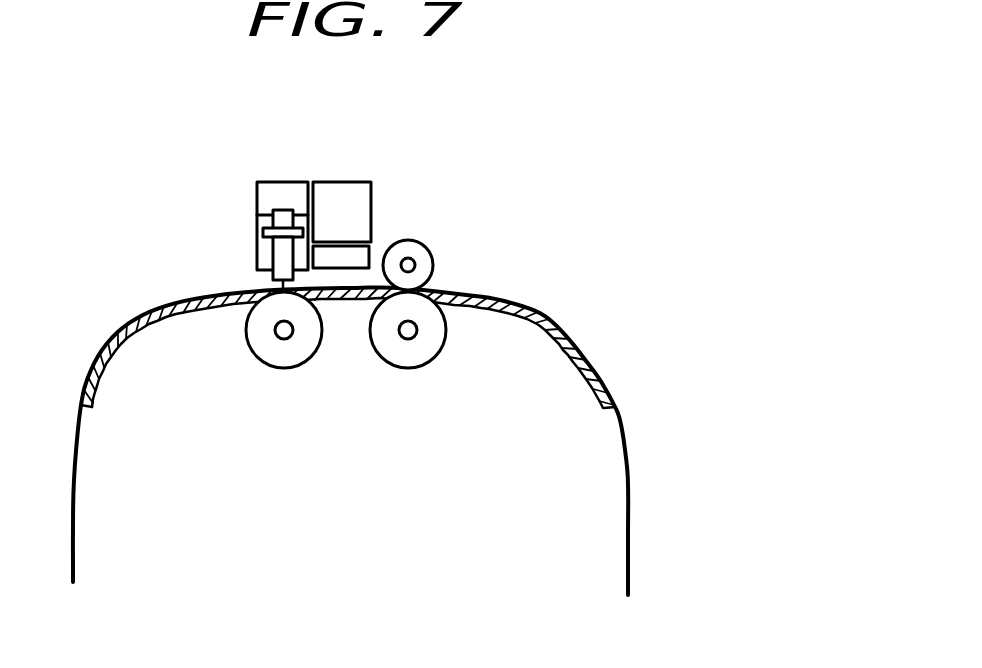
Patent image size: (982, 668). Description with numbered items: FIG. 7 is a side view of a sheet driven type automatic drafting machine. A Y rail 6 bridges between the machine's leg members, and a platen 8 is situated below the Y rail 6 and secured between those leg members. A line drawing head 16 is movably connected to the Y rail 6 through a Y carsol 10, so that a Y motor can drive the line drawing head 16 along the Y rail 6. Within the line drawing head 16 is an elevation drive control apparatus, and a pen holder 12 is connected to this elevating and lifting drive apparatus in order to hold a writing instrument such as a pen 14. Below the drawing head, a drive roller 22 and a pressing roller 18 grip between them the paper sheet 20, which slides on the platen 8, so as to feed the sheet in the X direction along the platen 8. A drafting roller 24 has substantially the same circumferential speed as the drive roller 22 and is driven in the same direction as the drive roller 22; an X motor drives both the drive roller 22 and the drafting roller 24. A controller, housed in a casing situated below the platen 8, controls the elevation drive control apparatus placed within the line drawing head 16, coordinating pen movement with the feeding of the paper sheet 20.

The Y rail 6 is at (347, 187).
The platen 8 is at (543, 312).
The Y carsol 10 is at (362, 260).
The pen holder 12 is at (260, 243).
The pen 14 is at (278, 261).
The line drawing head 16 is at (287, 187).
The pressing roller 18 is at (427, 260).
The paper sheet 20 is at (628, 483).
The drive roller 22 is at (417, 358).
The drafting roller 24 is at (288, 358).